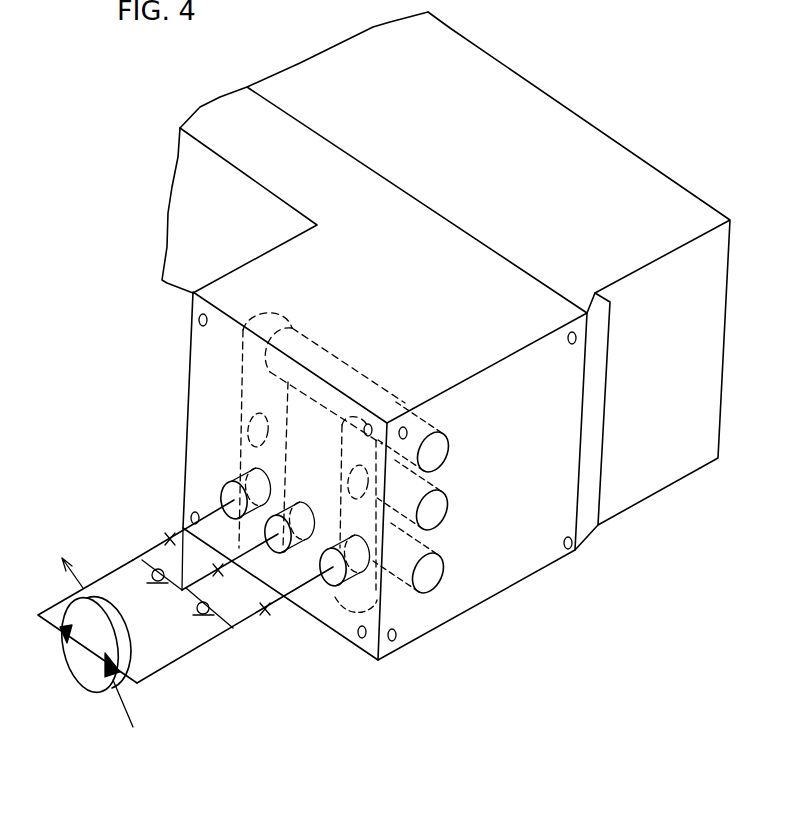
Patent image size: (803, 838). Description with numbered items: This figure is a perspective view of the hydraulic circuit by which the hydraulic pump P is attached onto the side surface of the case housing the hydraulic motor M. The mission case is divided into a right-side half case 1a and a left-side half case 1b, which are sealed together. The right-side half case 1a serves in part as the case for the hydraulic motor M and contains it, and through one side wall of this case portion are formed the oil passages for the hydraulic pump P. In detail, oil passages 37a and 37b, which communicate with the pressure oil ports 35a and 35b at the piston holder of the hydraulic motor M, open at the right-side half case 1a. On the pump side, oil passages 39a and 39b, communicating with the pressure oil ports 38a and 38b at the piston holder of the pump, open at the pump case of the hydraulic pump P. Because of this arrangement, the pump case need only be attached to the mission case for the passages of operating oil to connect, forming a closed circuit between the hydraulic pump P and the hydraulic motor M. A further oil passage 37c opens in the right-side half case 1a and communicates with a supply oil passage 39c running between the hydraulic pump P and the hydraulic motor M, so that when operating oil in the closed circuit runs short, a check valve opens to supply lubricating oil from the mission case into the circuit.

The right-side half case 1a is at (170, 208).
The left-side half case 1b is at (567, 107).
The hydraulic motor M is at (389, 329).
The pressure oil port 35a is at (250, 433).
The pressure oil port 35b is at (368, 492).
The oil passage 37a is at (233, 499).
The oil passage 37b is at (440, 568).
The oil passage 37c is at (283, 530).
The pressure oil port 38a is at (95, 580).
The pressure oil port 38b is at (182, 658).
The oil passage 39a is at (148, 542).
The oil passage 39b is at (263, 622).
The supply oil passage 39c is at (231, 628).
The hydraulic pump P is at (77, 663).